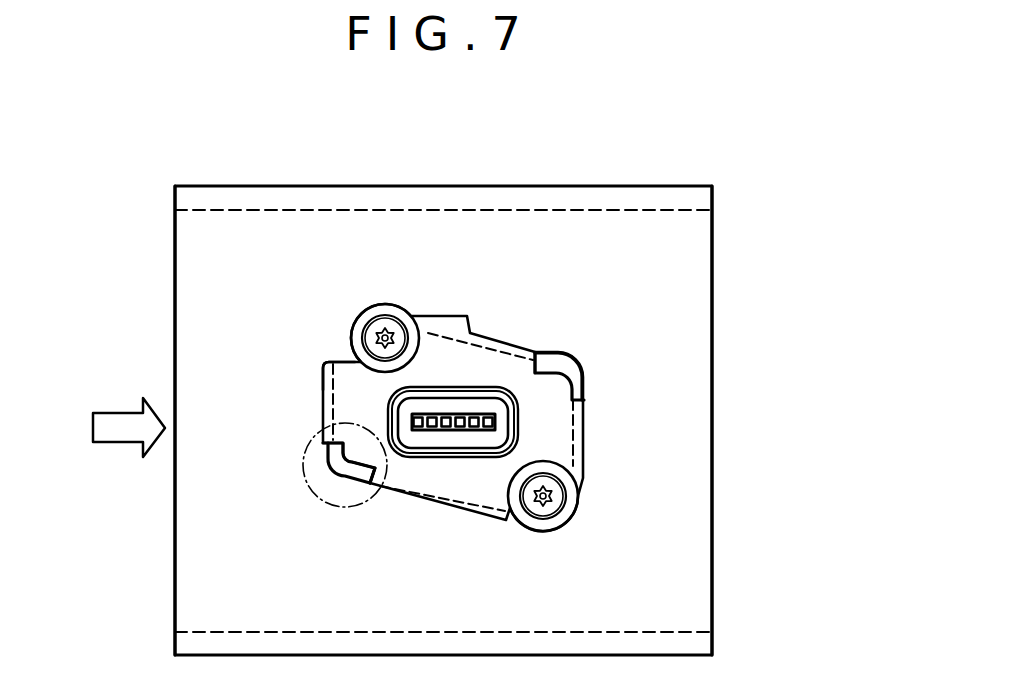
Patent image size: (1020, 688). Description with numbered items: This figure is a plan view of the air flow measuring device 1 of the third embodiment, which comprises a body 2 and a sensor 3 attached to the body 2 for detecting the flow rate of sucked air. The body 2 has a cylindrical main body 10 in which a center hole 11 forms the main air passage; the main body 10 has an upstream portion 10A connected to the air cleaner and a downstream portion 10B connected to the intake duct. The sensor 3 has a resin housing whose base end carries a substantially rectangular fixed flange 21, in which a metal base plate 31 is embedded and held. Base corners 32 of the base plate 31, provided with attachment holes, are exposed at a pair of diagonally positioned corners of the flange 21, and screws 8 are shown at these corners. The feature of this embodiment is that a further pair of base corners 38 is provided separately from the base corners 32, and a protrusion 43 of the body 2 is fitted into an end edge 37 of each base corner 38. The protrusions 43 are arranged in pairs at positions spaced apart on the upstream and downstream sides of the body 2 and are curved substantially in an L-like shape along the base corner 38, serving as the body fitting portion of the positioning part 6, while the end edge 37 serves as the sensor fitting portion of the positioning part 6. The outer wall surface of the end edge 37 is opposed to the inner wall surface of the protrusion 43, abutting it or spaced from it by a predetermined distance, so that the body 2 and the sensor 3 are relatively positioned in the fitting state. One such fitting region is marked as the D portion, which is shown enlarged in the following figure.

The air flow measuring device 1 is at (552, 118).
The body 2 is at (533, 178).
The sensor 3 is at (451, 378).
The positioning part 6 is at (440, 412).
The screw 8 is at (394, 334).
The main body 10 is at (590, 240).
The upstream portion 10A is at (175, 246).
The downstream portion 10B is at (712, 246).
The center hole 11 is at (681, 208).
The fixed flange 21 is at (500, 362).
The base plate 31 is at (345, 352).
The base corners 32 is at (362, 318).
The end edge 37 is at (557, 354).
The base corners 38 is at (549, 352).
The protrusion 43 is at (564, 369).
The D portion D is at (318, 437).